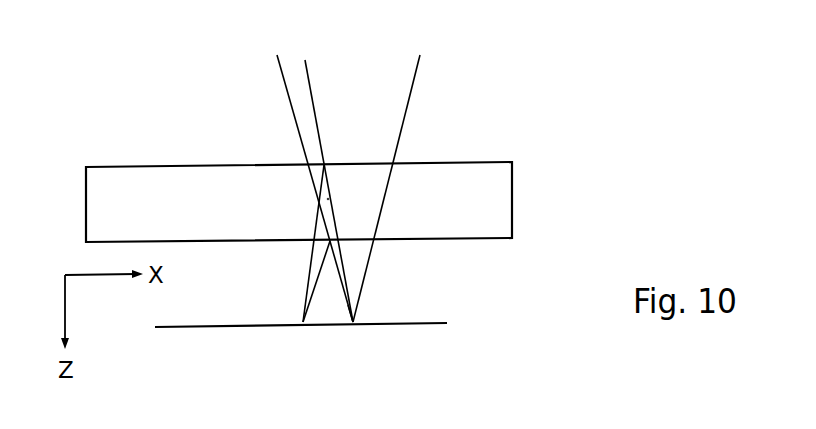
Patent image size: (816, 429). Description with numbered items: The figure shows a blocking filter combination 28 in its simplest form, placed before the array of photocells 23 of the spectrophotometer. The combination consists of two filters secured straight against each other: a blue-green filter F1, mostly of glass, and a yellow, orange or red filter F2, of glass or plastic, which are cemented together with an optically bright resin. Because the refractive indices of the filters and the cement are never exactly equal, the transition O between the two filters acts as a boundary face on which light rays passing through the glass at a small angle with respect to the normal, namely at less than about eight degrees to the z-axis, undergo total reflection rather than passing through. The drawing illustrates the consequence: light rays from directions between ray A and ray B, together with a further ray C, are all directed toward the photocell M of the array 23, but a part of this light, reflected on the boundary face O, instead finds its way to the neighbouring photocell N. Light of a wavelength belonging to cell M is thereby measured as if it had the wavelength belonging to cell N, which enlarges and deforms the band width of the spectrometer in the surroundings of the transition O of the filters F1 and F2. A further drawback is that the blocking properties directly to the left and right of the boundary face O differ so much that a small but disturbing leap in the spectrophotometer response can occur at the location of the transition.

The blocking filter 28 is at (303, 163).
The array of photocells 23 is at (423, 325).
The light ray direction A is at (309, 176).
The light ray direction B is at (391, 176).
The light ray C is at (327, 176).
The transition of the two filters O is at (328, 199).
The photocell N is at (313, 261).
The photocell M is at (356, 331).
The blue-green filter F1 is at (133, 204).
The yellow, orange or red filter F2 is at (475, 200).